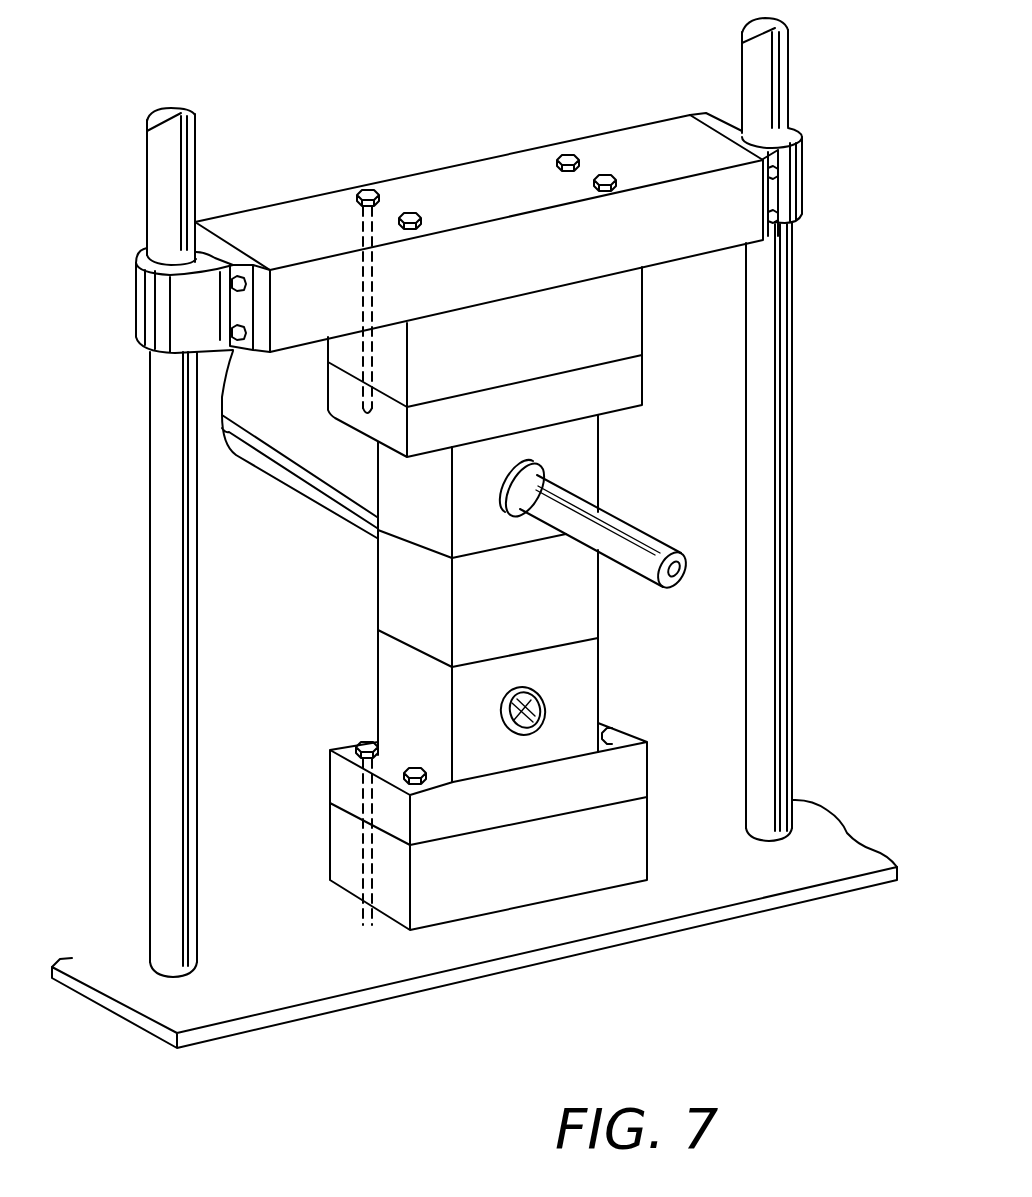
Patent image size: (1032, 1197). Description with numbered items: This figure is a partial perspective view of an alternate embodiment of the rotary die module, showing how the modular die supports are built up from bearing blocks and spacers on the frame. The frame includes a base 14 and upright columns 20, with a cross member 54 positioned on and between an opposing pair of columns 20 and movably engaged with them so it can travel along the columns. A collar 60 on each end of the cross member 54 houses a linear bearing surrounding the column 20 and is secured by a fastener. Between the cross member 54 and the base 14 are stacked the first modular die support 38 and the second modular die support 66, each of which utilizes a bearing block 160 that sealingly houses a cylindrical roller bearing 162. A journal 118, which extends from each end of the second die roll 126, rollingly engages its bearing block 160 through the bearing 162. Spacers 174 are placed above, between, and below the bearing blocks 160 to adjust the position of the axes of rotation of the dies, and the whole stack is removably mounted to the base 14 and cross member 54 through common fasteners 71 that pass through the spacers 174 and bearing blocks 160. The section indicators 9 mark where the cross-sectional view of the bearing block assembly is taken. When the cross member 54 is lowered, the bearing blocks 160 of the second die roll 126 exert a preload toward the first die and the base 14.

The base 14 is at (285, 994).
The column 20 is at (153, 171).
The first modular die support 38 is at (608, 693).
The cross member 54 is at (468, 170).
The collar 60 is at (152, 338).
The second modular die support 66 is at (663, 418).
The common fastener 71 is at (366, 188).
The journal 118 is at (637, 524).
The second die roll 126 is at (284, 462).
The bearing block 160 is at (645, 377).
The cylindrical roller bearing 162 is at (505, 482).
The spacer 174 is at (645, 303).
The section line 9 is at (546, 568).